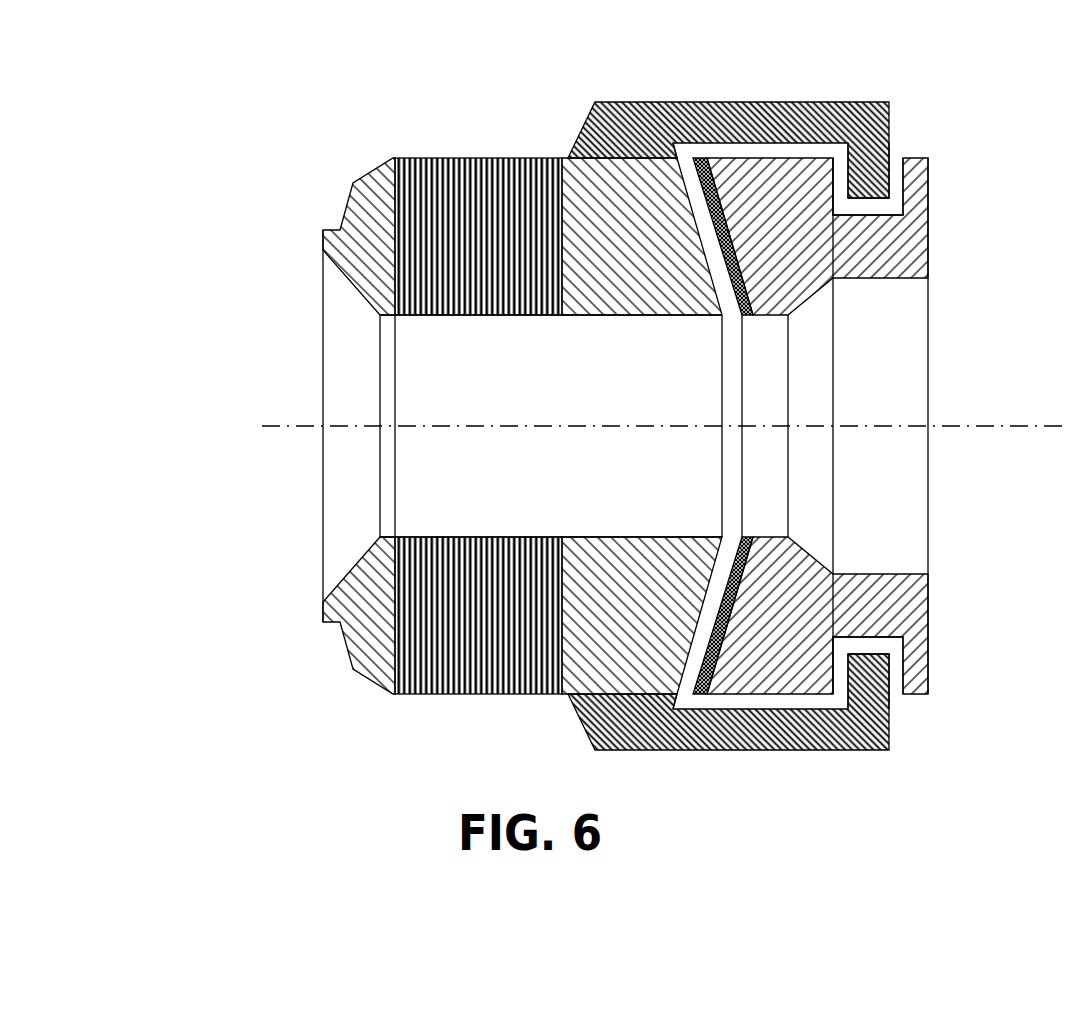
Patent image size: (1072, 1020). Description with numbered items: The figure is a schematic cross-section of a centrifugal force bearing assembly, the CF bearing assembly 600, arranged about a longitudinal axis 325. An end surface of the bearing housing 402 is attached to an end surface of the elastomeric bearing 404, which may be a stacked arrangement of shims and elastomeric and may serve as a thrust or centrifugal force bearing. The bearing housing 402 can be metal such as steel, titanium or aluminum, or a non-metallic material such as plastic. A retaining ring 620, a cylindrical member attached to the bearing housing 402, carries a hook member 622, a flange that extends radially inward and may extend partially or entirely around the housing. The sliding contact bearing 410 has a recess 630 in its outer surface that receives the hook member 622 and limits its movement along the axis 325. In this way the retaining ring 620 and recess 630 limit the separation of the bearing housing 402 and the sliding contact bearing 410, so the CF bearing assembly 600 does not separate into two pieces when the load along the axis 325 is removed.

The CF bearing assembly 600 is at (157, 92).
The longitudinal axis 325 is at (277, 426).
The bearing housing 402 is at (337, 184).
The elastomeric bearing 404 is at (433, 158).
The retaining ring 620 is at (598, 100).
The hook member 622 is at (902, 142).
The recess 630 is at (918, 193).
The sliding contact bearing 410 is at (946, 633).